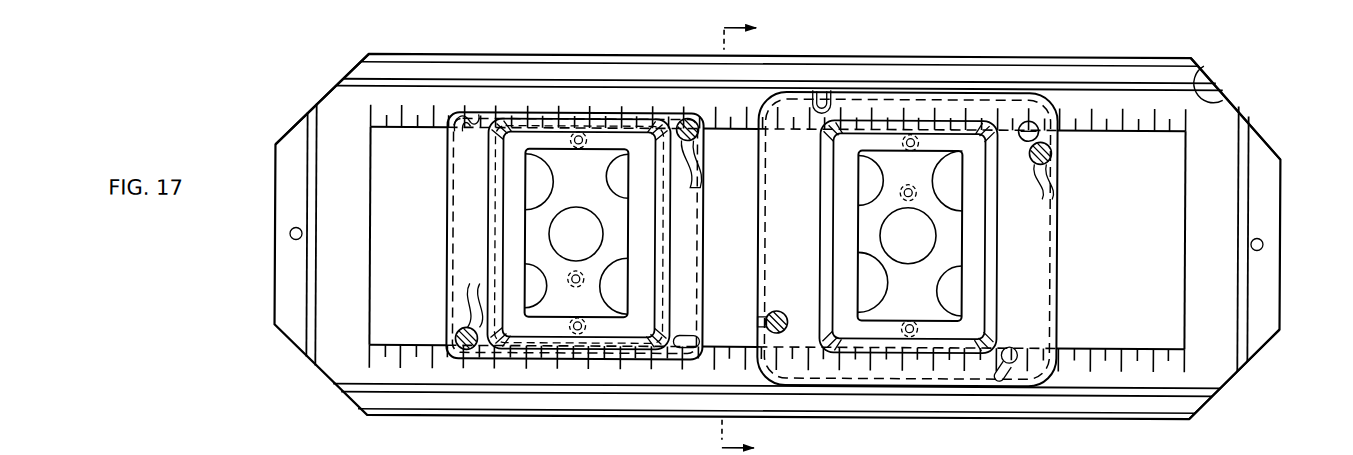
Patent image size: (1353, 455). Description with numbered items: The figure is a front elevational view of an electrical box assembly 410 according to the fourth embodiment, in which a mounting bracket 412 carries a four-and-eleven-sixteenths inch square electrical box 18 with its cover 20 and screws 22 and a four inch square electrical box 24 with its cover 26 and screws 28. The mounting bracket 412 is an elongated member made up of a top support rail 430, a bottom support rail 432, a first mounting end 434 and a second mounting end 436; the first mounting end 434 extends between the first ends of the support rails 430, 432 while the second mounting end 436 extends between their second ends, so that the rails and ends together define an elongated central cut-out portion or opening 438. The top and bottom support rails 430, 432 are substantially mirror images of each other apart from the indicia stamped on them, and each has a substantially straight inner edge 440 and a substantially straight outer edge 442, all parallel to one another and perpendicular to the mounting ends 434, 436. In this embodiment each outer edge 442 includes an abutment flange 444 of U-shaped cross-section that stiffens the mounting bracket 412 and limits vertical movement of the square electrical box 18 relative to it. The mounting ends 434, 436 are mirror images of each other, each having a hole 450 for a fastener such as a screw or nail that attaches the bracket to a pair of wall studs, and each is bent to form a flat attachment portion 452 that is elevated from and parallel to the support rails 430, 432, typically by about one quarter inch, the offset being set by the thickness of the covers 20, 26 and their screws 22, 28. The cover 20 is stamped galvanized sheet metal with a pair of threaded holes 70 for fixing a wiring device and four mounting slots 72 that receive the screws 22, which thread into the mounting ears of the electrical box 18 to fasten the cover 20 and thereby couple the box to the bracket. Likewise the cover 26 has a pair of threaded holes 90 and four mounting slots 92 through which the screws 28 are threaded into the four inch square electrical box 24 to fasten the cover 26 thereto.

The electrical box assembly 410 is at (1118, 47).
The mounting bracket 412 is at (309, 104).
The first mounting end 434 is at (339, 126).
The top support rail 430 is at (452, 112).
The bottom support rail 432 is at (490, 378).
The second mounting end 436 is at (1238, 105).
The central cut-out portion or opening 438 is at (1185, 245).
The inner edge 440 is at (1132, 135).
The outer edge 442 is at (1222, 100).
The abutment flange 444 is at (993, 57).
The hole 450 is at (291, 241).
The attachment portion 452 is at (293, 303).
The cover 20 is at (1062, 246).
The screws 22 is at (783, 311).
The 4 inch square electrical box 24 is at (447, 186).
The cover 26 is at (446, 226).
The screws 28 is at (473, 287).
The threaded holes 70 is at (909, 136).
The mounting slots 72 is at (817, 113).
The threaded holes 90 is at (578, 136).
The mounting slots 92 is at (684, 120).
The 4 11/16 inch square electrical box 18 is at (1086, 331).